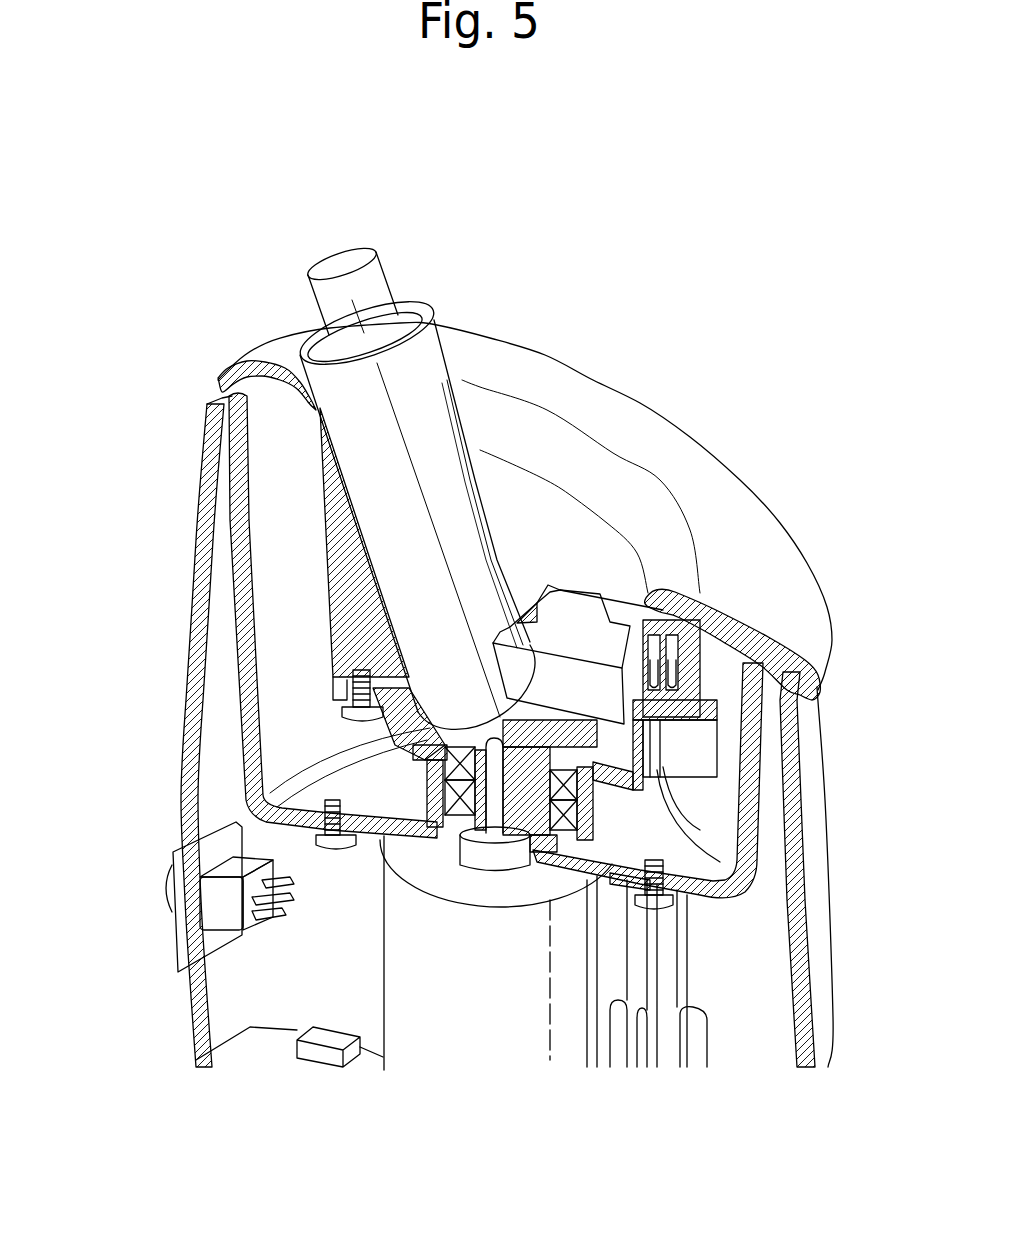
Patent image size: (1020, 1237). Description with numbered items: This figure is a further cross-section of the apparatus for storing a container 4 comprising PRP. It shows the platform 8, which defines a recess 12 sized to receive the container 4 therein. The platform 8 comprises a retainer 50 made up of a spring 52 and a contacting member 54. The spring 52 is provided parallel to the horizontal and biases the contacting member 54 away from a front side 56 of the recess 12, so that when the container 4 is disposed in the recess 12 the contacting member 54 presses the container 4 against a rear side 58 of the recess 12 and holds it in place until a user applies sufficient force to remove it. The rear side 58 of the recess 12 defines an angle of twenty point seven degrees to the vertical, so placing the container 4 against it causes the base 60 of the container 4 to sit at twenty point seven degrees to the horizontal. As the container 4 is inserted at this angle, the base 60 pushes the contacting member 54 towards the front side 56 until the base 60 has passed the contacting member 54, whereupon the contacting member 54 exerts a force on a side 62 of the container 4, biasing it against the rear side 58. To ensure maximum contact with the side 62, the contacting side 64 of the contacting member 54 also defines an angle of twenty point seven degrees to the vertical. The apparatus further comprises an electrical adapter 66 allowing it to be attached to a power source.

The container 4 is at (343, 262).
The platform 8 is at (268, 347).
The recess 12 is at (359, 480).
The retainer 50 is at (634, 482).
The spring 52 is at (638, 637).
The contacting member 54 is at (597, 613).
The front side 56 is at (683, 651).
The rear side 58 is at (370, 574).
The base 60 is at (477, 723).
The side 62 is at (500, 537).
The contacting side 64 is at (526, 611).
The electrical adapter 66 is at (178, 880).